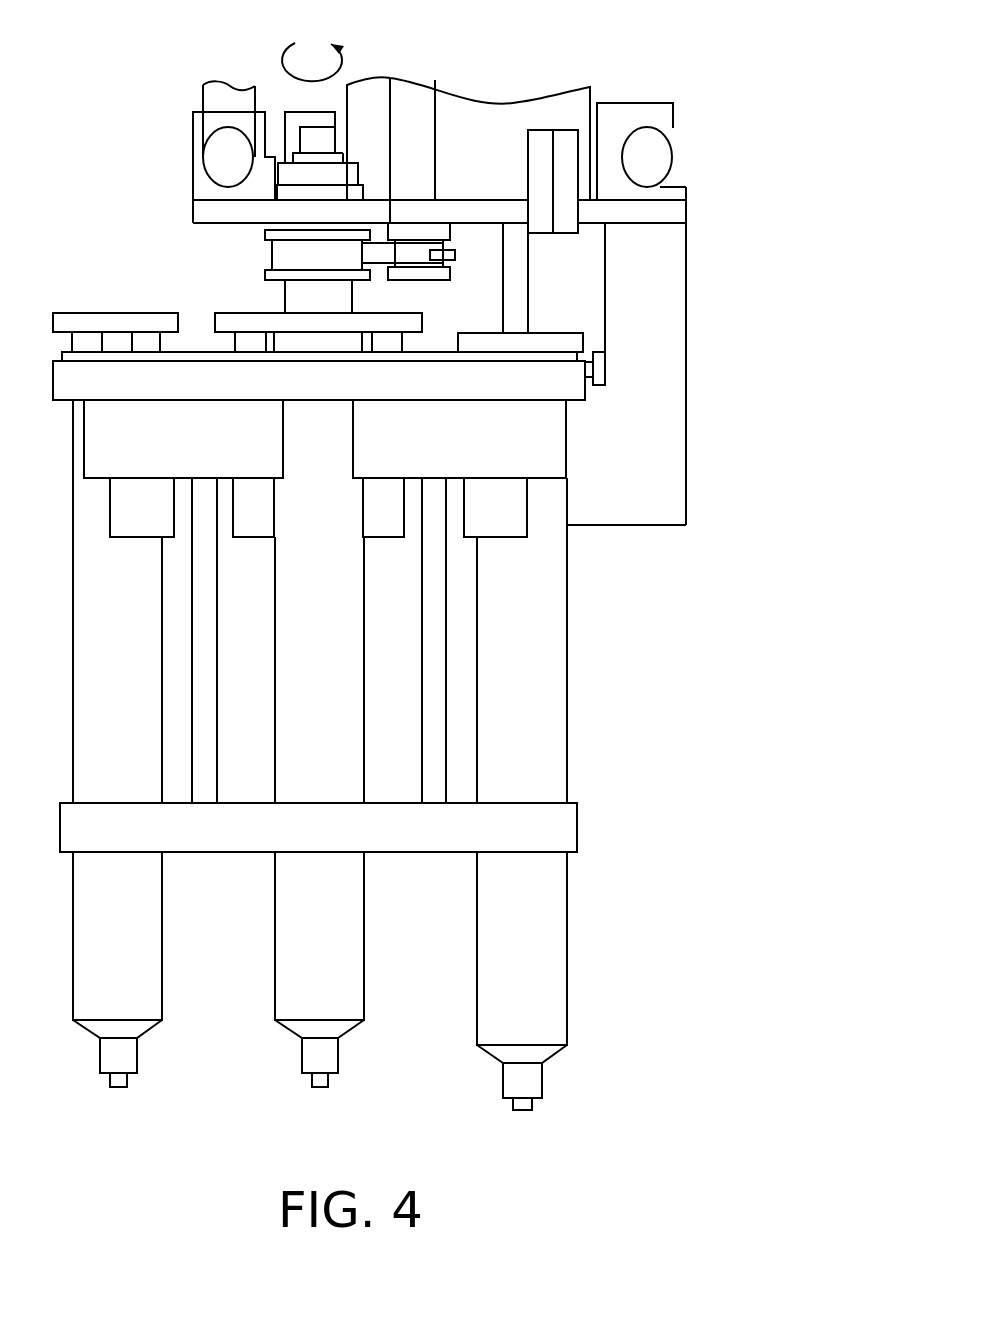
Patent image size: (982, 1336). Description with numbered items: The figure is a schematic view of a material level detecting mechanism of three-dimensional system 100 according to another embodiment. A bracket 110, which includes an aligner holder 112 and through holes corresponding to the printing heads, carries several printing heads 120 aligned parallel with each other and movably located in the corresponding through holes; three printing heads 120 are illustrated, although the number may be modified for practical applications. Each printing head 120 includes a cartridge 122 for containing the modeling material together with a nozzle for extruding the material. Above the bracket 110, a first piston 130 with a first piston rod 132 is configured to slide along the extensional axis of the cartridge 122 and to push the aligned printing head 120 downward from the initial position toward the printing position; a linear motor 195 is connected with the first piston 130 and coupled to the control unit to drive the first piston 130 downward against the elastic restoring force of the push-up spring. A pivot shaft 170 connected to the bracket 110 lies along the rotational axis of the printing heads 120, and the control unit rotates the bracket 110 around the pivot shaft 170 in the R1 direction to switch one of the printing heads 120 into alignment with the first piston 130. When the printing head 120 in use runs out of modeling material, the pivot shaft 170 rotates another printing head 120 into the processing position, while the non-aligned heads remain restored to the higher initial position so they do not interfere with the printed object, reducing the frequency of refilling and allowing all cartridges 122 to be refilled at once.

The material level detecting mechanism of 3-D system 100 is at (760, 1168).
The bracket 110 is at (600, 402).
The aligner holder 112 is at (507, 522).
The printing head 120 is at (590, 668).
The cartridge 122 is at (567, 773).
The first piston 130 is at (512, 204).
The first piston rod 132 is at (518, 278).
The pivot shaft 170 is at (292, 225).
The linear motor 195 is at (653, 342).
The R1 direction R1 is at (282, 60).